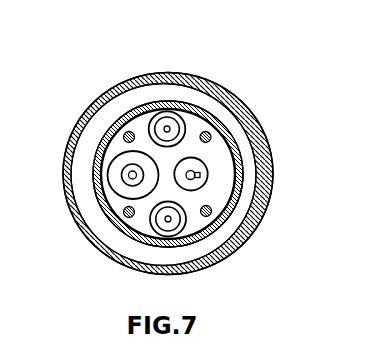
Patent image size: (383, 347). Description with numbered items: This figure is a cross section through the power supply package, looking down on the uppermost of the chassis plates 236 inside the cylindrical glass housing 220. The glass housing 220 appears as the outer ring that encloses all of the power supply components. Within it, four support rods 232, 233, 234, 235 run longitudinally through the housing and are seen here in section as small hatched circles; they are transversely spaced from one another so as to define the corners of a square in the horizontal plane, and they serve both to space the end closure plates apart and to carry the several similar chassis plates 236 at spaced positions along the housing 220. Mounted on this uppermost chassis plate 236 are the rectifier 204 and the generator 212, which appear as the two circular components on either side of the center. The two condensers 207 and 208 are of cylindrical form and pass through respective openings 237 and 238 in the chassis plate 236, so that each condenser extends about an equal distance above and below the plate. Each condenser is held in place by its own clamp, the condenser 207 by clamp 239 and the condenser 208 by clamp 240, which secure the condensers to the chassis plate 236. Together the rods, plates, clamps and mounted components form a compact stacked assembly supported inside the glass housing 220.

The rectifier 204 is at (208, 185).
The condenser 207 is at (188, 89).
The condenser 208 is at (166, 223).
The generator 212 is at (111, 176).
The cylindrical glass housing 220 is at (241, 147).
The support rod 232 is at (125, 211).
The support rod 233 is at (125, 136).
The support rod 234 is at (208, 133).
The support rod 235 is at (210, 209).
The chassis plate 236 is at (173, 174).
The opening 237 is at (187, 121).
The opening 238 is at (197, 243).
The clamp 239 is at (138, 109).
The clamp 240 is at (113, 227).